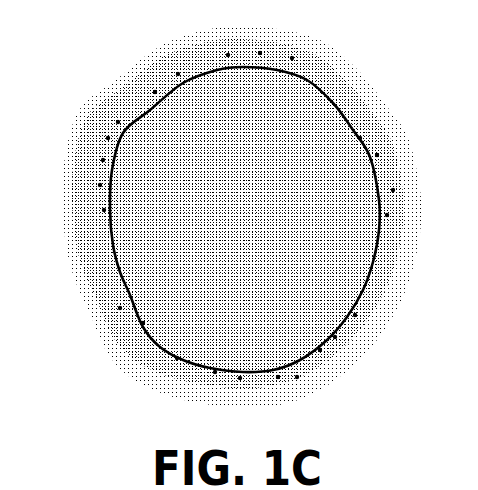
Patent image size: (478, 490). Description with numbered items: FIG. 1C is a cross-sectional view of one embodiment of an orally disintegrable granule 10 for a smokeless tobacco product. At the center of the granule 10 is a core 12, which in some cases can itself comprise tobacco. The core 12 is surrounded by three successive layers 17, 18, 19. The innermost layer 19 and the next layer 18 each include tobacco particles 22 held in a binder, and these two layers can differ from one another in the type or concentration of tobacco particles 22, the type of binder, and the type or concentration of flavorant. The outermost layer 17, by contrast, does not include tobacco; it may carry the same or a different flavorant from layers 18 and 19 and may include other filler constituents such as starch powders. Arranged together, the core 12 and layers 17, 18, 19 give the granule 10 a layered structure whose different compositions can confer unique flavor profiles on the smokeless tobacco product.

The orally disintegrable granule 10 is at (233, 217).
The core 12 is at (277, 163).
The layer 17 is at (68, 143).
The layer 18 is at (117, 138).
The layer 19 is at (187, 100).
The tobacco particles 22 is at (360, 138).